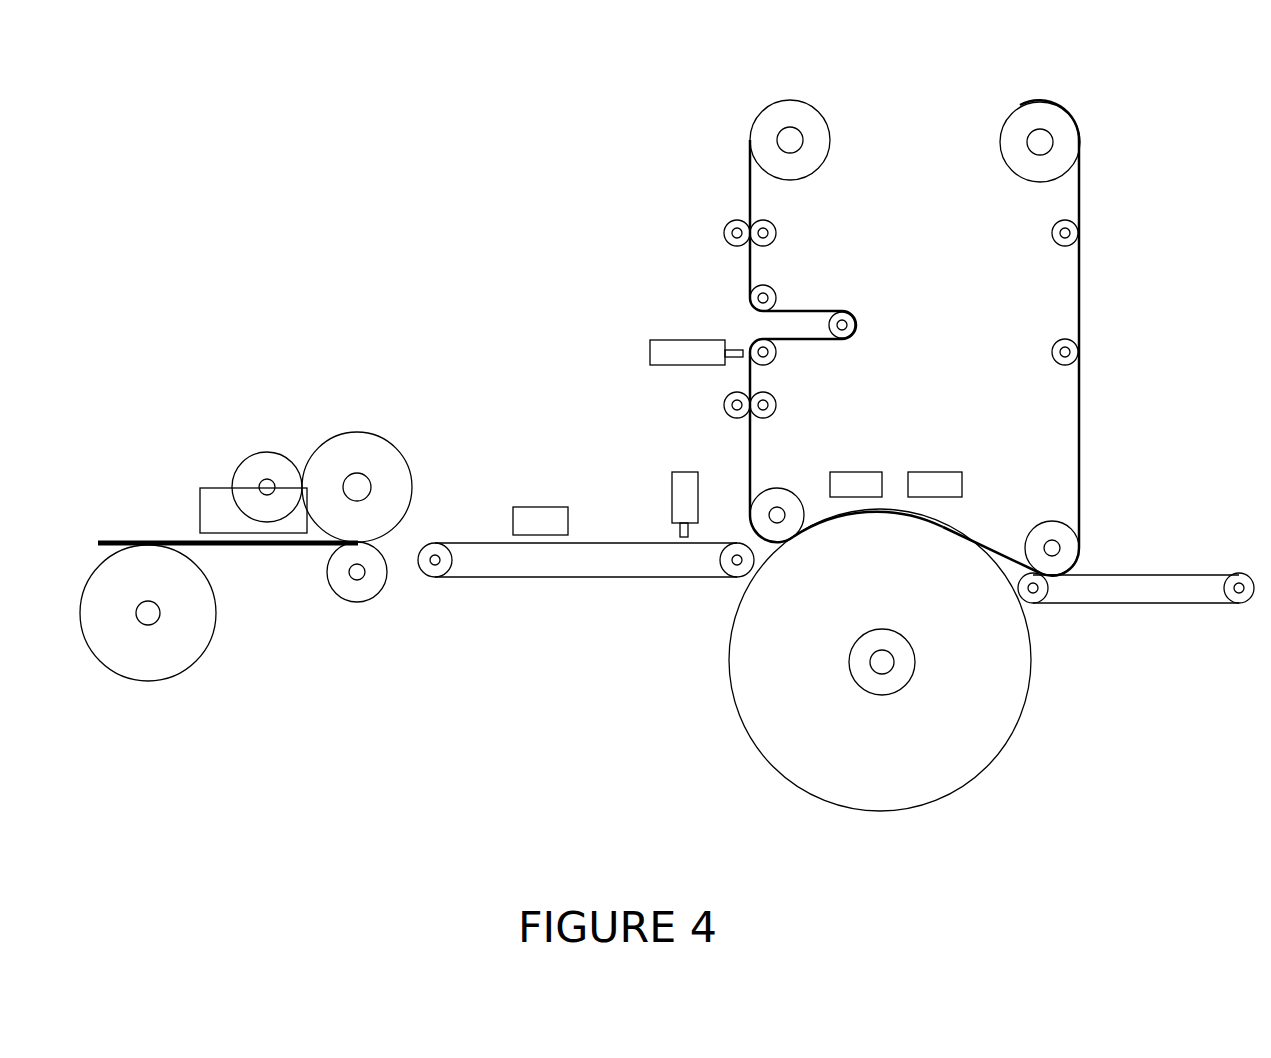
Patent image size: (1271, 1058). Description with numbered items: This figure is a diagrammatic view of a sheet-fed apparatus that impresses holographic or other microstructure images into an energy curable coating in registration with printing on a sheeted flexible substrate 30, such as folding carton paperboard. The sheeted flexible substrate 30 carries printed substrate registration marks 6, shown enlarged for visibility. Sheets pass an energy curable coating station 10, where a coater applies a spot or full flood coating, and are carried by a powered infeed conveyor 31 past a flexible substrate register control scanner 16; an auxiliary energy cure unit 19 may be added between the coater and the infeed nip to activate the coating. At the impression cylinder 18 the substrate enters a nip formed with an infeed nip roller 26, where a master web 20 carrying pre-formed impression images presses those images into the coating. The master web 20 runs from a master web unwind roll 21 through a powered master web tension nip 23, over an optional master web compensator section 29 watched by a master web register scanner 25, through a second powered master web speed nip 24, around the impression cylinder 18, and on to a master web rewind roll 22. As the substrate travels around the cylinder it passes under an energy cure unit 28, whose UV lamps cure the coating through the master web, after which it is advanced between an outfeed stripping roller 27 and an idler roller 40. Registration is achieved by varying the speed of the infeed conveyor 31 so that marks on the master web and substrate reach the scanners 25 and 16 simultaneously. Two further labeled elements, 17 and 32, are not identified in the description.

The substrate registration marks 6 is at (98, 543).
The energy curable coating station 10 is at (285, 422).
The flexible substrate register control scanner 16 is at (678, 505).
The roller shaft 17 is at (357, 487).
The impression cylinder 18 is at (1003, 687).
The auxiliary energy cure unit 19 is at (540, 515).
The master web 20 is at (1082, 190).
The master web unwind roll 21 is at (782, 112).
The master web rewind roll 22 is at (1040, 118).
The master web tension nip 23 is at (708, 224).
The master web speed nip 24 is at (706, 404).
The master web register scanner 25 is at (660, 348).
The infeed nip roller 26 is at (787, 495).
The outfeed stripping roller 27 is at (1055, 533).
The energy cure unit 28 is at (855, 478).
The master web compensator section 29 is at (822, 300).
The sheeted flexible substrate 30 is at (170, 545).
The powered infeed conveyor 31 is at (471, 524).
The output conveyor 32 is at (1139, 560).
The idler roller 40 is at (197, 616).